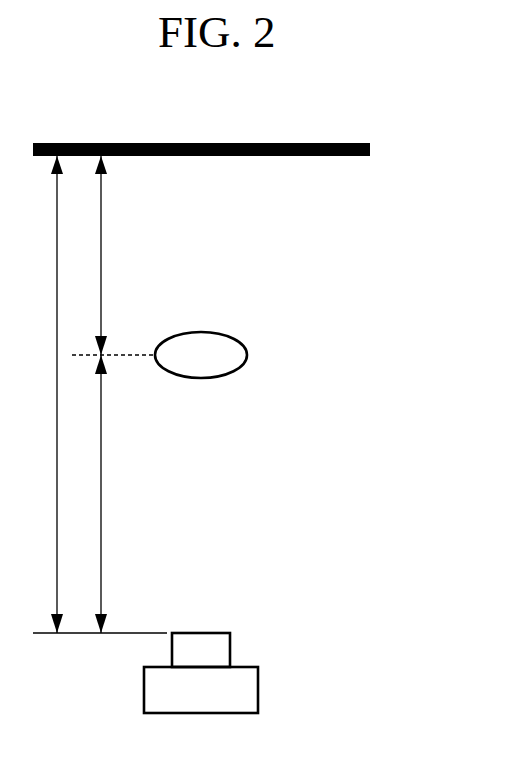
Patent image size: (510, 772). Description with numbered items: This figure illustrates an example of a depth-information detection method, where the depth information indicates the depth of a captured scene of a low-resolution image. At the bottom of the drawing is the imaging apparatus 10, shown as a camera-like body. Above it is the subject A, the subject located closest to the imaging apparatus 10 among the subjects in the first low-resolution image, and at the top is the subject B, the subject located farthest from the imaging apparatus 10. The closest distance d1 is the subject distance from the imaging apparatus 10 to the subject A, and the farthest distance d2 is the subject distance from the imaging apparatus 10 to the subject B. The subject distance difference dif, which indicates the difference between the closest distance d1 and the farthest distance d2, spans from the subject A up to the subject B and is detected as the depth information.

The subject B is at (370, 149).
The subject A is at (247, 353).
The imaging apparatus 10 is at (258, 685).
The closest distance d1 is at (113, 494).
The farthest distance d2 is at (40, 394).
The subject distance difference dif is at (122, 255).